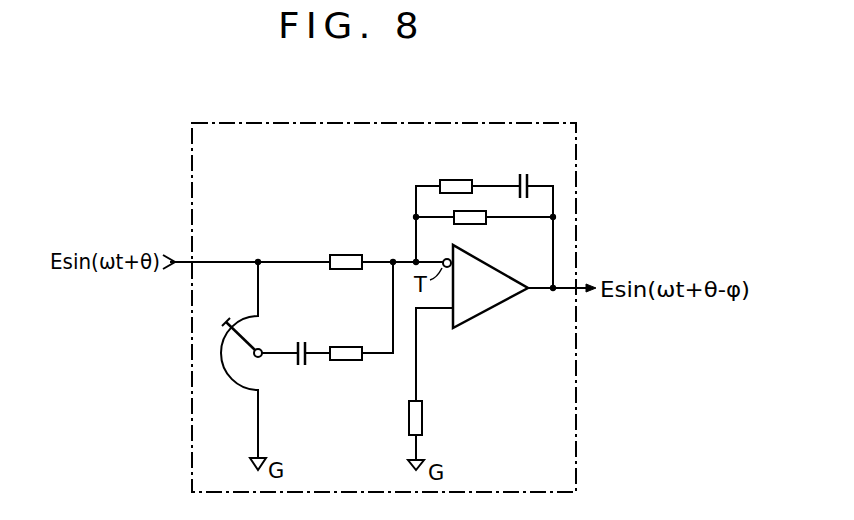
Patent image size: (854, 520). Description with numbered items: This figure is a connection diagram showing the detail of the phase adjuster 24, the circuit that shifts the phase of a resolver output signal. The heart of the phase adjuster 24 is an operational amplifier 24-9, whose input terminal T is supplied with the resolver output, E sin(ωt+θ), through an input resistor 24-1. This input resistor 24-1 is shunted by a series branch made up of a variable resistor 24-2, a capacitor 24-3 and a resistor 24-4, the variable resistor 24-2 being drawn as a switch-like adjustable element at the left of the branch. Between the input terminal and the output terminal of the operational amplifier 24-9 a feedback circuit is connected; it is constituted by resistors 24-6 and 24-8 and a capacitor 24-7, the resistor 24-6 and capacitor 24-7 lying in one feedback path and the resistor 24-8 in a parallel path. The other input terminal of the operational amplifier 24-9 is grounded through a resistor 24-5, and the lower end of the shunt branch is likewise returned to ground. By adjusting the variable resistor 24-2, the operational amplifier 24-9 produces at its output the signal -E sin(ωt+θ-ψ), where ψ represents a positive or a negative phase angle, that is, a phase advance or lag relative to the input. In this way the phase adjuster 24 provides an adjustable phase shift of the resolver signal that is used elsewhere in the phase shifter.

The phase adjuster 24 is at (269, 123).
The input resistor 24-1 is at (345, 254).
The variable resistor 24-2 is at (262, 337).
The capacitor 24-3 is at (302, 366).
The resistor 24-4 is at (352, 360).
The resistor 24-5 is at (422, 420).
The resistor 24-6 is at (458, 179).
The capacitor 24-7 is at (524, 173).
The resistor 24-8 is at (470, 224).
The operational amplifier 24-9 is at (486, 313).